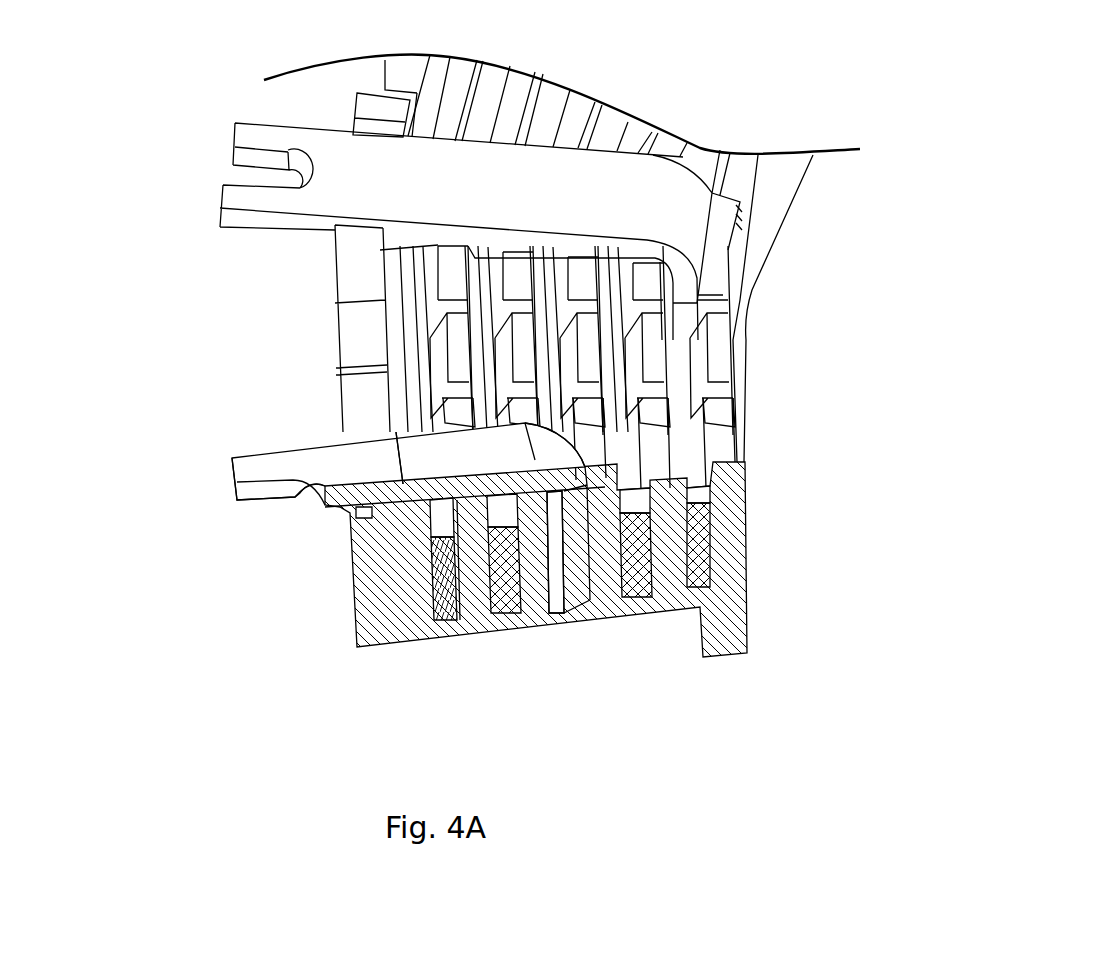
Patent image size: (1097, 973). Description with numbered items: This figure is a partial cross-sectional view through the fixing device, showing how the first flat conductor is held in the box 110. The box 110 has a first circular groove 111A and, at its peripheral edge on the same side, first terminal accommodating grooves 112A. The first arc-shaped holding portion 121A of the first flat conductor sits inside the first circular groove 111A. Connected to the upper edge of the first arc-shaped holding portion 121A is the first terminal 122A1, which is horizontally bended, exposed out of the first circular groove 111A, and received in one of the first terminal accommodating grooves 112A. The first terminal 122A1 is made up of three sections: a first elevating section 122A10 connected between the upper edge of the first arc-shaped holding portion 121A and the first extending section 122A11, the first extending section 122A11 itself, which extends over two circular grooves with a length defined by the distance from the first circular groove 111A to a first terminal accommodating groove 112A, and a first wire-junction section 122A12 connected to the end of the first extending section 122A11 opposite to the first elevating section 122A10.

The box 110 is at (390, 617).
The first circular groove 111A is at (555, 602).
The first terminal accommodating grooves 112A is at (357, 510).
The first arc-shaped holding portion 121A is at (573, 590).
The first terminal 122A1 is at (138, 325).
The first elevating section 122A10 is at (555, 447).
The first extending section 122A11 is at (450, 455).
The first wire-junction section 122A12 is at (330, 463).